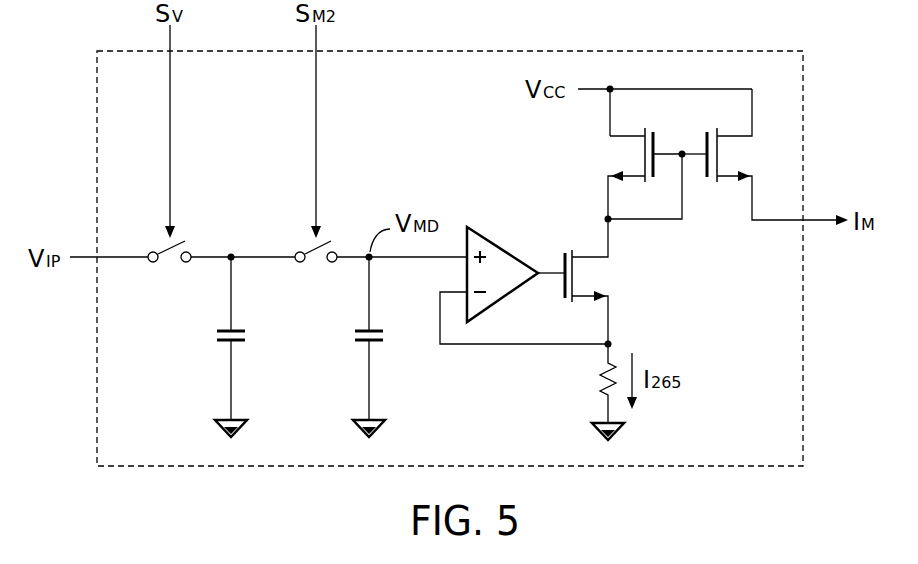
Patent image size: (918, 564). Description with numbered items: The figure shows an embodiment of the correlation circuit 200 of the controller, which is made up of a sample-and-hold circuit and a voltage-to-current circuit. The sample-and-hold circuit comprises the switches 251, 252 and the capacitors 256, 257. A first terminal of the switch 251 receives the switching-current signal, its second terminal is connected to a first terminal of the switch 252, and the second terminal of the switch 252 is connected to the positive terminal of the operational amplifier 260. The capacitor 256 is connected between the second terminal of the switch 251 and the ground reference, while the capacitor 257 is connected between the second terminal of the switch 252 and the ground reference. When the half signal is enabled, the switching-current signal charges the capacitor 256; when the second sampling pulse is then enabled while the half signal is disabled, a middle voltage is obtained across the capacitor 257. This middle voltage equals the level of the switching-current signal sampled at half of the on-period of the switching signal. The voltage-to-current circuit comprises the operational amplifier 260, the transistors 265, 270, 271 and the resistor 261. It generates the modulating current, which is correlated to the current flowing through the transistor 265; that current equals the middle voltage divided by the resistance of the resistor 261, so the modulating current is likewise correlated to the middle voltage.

The correlation circuit 200 is at (737, 51).
The switch 251 is at (170, 266).
The switch 252 is at (318, 266).
The capacitor 256 is at (248, 333).
The capacitor 257 is at (386, 333).
The operational amplifier 260 is at (500, 243).
The resistor 261 is at (592, 378).
The transistor 265 is at (615, 276).
The transistor 270 is at (605, 150).
The transistor 271 is at (755, 160).